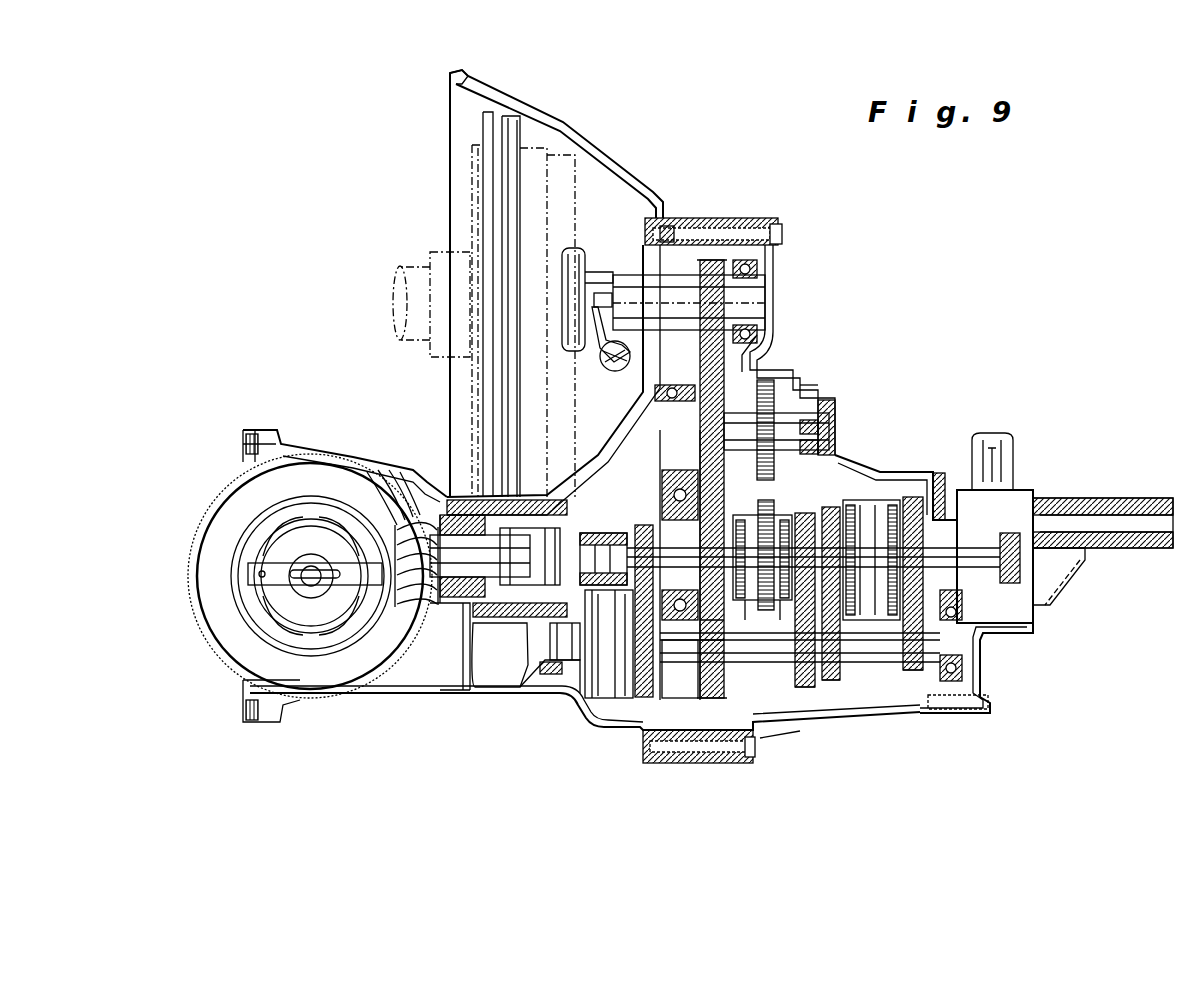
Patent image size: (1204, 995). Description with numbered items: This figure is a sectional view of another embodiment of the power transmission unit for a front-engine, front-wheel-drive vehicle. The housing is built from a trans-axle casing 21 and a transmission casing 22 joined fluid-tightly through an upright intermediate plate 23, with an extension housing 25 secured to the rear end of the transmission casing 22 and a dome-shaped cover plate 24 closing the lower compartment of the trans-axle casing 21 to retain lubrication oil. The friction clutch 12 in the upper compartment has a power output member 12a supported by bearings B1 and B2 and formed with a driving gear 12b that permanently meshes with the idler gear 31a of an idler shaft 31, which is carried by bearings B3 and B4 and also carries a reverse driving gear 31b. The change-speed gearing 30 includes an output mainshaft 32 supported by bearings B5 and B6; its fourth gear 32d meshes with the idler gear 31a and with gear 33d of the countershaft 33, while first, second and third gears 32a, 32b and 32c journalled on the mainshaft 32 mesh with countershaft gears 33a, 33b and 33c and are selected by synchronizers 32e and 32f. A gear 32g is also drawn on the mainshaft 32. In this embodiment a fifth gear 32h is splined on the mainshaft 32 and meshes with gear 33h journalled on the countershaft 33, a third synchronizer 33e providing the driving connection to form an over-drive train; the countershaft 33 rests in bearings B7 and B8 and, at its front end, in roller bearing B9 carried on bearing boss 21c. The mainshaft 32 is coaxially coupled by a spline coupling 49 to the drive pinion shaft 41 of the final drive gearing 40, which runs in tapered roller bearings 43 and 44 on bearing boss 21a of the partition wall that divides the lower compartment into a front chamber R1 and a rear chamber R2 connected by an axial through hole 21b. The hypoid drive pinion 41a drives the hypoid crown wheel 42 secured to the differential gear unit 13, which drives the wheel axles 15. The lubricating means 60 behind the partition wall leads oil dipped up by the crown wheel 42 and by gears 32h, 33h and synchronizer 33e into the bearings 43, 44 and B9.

The friction clutch 12 is at (470, 180).
The power output member 12a is at (752, 295).
The driving gear 12b is at (718, 262).
The differential gear unit 13 is at (252, 600).
The wheel axles 15 is at (292, 610).
The trans-axle casing 21 is at (548, 132).
The bearing boss 21a is at (534, 674).
The axial through hole 21b is at (462, 680).
The bearing boss 21c is at (558, 690).
The transmission casing 22 is at (787, 723).
The intermediate plate 23 is at (705, 766).
The cover plate 24 is at (196, 548).
The extension housing 25 is at (1093, 505).
The change-speed gearing 30 is at (840, 476).
The idler shaft 31 is at (738, 425).
The idler gear 31a is at (768, 352).
The reverse driving gear 31b is at (805, 390).
The output mainshaft 32 is at (1000, 533).
The first gear 32a is at (915, 497).
The second gear 32b is at (838, 505).
The third gear 32c is at (805, 515).
The fourth gear 32d is at (745, 515).
The synchronizer 32e is at (870, 622).
The synchronizer 32f is at (755, 622).
The main shaft gear 32g is at (768, 505).
The fifth gear 32h is at (640, 540).
The countershaft 33 is at (982, 648).
The countershaft gear 33a is at (913, 673).
The countershaft gear 33b is at (833, 683).
The countershaft gear 33c is at (806, 690).
The countershaft gear 33d is at (720, 700).
The third synchronizer 33e is at (600, 700).
The gear 33h is at (645, 700).
The final drive gearing 40 is at (420, 498).
The drive pinion shaft 41 is at (480, 545).
The hypoid drive pinion 41a is at (466, 652).
The hypoid crown wheel 42 is at (372, 490).
The tapered roller bearing 43 is at (500, 655).
The tapered roller bearing 44 is at (532, 528).
The spline coupling 49 is at (598, 533).
The lubricating means 60 is at (542, 627).
The bearing B1 is at (686, 230).
The bearing B2 is at (768, 272).
The bearing B3 is at (652, 393).
The bearing B4 is at (838, 414).
The bearing B5 is at (662, 505).
The bearing B6 is at (962, 602).
The bearing B7 is at (690, 766).
The bearing B8 is at (975, 678).
The roller bearing B9 is at (550, 668).
The front chamber R1 is at (390, 692).
The rear chamber R2 is at (617, 710).